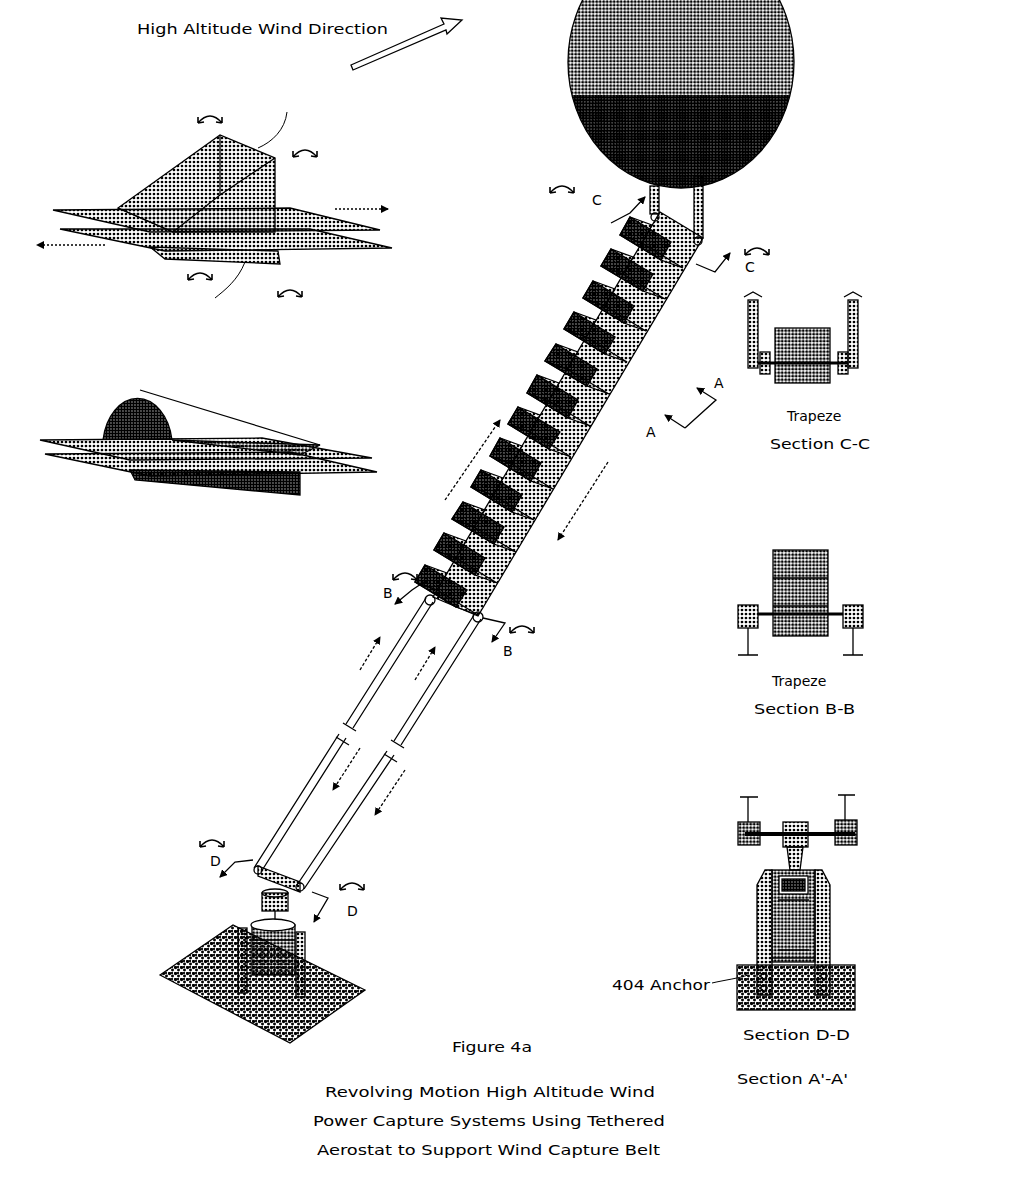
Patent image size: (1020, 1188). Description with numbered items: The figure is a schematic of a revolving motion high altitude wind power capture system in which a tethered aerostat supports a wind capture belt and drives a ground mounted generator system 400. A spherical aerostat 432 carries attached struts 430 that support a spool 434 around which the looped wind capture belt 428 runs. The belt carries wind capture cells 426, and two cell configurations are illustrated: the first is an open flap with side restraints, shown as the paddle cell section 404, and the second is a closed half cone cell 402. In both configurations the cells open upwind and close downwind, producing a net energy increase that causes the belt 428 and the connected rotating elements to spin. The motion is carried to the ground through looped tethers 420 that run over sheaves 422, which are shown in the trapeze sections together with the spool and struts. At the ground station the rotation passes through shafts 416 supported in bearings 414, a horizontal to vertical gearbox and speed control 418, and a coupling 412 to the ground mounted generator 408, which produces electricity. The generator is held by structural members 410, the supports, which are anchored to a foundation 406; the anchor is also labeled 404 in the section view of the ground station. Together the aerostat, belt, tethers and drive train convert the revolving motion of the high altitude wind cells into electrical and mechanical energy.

The Ground Mounted Generator System 400 is at (245, 908).
The closed half cone cell 402 is at (208, 478).
The open flap cell 404 is at (214, 230).
The foundation 406 is at (752, 968).
The ground mounted generator 408 is at (770, 925).
The structural members 410 is at (760, 900).
The coupling 412 is at (790, 860).
The bearings 414 is at (757, 845).
The shafts 416 is at (770, 830).
The Horizontal to Vertical Gearbox & Speed Control 418 is at (797, 820).
The looped tethers 420 is at (428, 690).
The sheaves 422 is at (742, 603).
The Wind Capture Cells 426 is at (548, 375).
The wind capture belt 428 is at (600, 315).
The struts 430 is at (703, 210).
The spherical aerostat 432 is at (566, 80).
The spool 434 is at (762, 378).